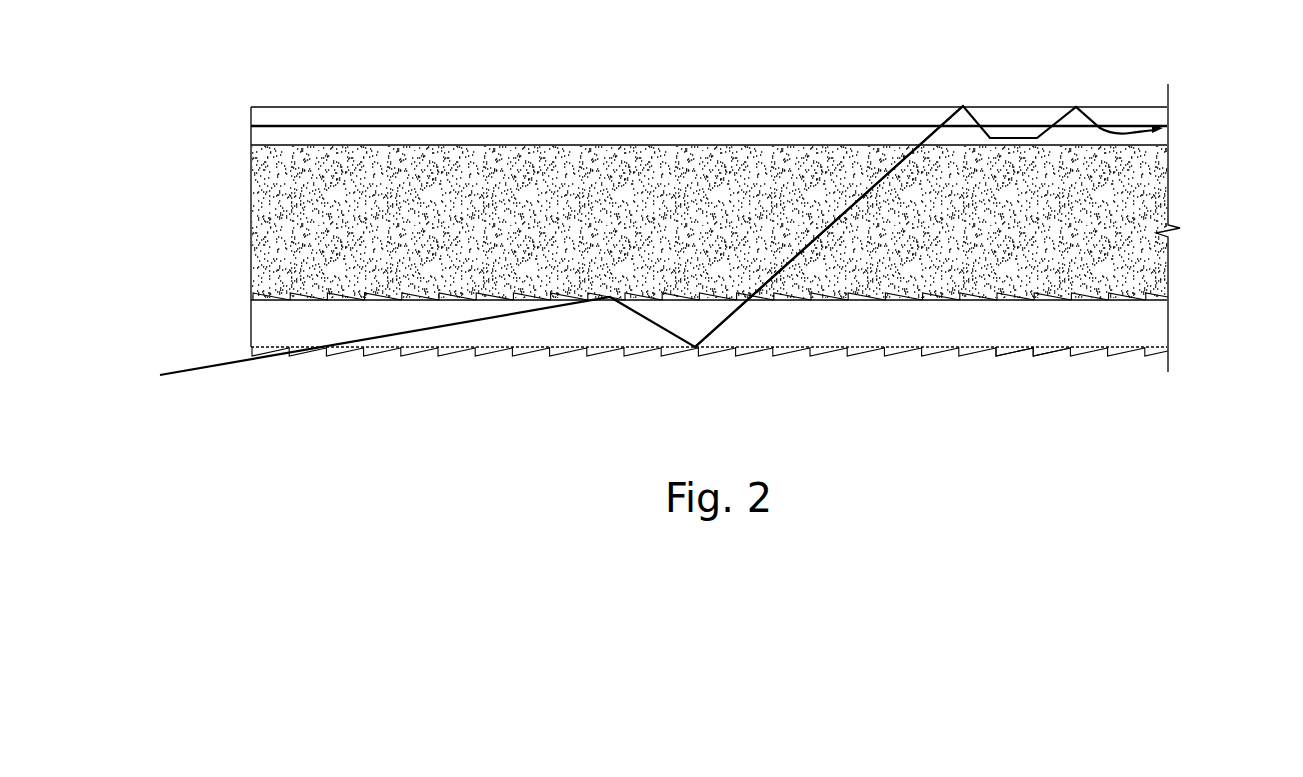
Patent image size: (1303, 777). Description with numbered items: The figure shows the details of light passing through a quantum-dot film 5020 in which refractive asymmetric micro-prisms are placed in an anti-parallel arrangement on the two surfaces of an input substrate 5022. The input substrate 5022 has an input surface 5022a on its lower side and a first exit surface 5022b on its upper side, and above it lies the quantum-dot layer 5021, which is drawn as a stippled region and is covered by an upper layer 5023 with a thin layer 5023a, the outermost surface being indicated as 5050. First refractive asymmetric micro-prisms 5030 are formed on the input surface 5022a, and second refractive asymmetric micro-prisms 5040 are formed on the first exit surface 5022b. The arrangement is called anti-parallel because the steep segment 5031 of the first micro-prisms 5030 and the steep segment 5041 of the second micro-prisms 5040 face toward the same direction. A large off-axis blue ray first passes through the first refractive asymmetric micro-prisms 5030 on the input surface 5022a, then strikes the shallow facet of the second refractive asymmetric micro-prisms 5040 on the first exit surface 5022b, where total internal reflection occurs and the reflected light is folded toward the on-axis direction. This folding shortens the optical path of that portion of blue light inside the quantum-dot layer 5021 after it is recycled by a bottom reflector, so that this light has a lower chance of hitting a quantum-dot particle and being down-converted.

The optical film / light guide structure 5020 is at (240, 222).
The quantum-dot layer 5021 is at (1170, 197).
The prism layer 5022 is at (1158, 324).
The input surface 5022a is at (1128, 355).
The first exit surface 5022b is at (1127, 293).
The upper layer 5023 is at (1158, 137).
The reflective film 5023a is at (371, 124).
The first refractive asymmetric micro-prisms 5030 is at (1022, 359).
The steep segment 5031 is at (998, 351).
The second refractive asymmetric micro-prisms 5040 is at (890, 297).
The steep segment 5041 is at (865, 293).
The top surface 5050 is at (798, 106).